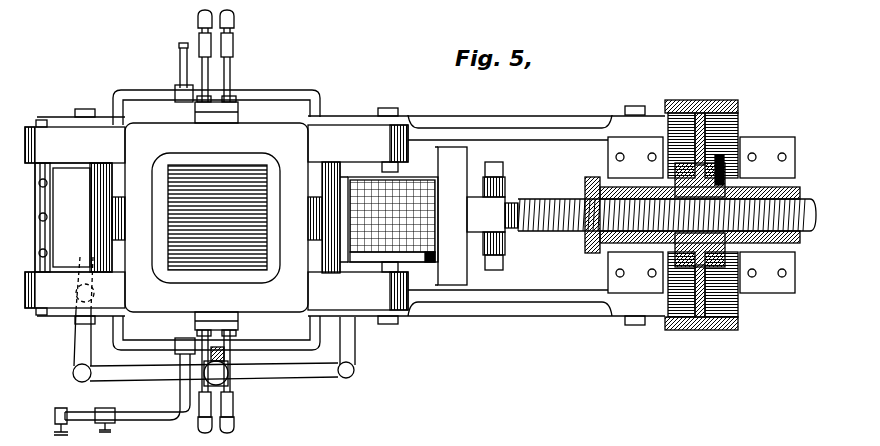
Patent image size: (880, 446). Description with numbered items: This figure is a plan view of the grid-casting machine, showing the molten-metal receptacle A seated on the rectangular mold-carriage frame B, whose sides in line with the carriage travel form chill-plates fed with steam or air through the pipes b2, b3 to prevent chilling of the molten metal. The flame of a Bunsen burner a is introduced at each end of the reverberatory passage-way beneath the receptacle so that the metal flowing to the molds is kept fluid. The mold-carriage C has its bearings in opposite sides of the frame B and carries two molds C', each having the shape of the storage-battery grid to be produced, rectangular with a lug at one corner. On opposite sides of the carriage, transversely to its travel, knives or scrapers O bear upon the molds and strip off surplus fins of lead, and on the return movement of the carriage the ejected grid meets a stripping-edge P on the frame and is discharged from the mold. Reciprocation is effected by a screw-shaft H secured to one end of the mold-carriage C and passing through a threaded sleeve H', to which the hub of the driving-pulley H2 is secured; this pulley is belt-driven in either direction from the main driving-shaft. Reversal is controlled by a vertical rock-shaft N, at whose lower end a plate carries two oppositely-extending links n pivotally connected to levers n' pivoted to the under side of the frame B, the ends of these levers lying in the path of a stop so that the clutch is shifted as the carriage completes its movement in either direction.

The molten-metal receptacle A is at (216, 217).
The mold-carriage frame B is at (216, 217).
The Bunsen burner a is at (216, 216).
The knives or scrapers O is at (73, 217).
The stripping-edge P is at (90, 200).
The mold-carriage C is at (429, 216).
The molds C' is at (393, 212).
The screw-shaft H is at (667, 227).
The threaded sleeve H' is at (686, 215).
The driving-pulley H2 is at (742, 120).
The vertical rock-shaft N is at (226, 352).
The links n is at (214, 379).
The levers n' is at (215, 319).
The steam or air pipe b2 is at (55, 416).
The steam or air pipe b3 is at (118, 422).